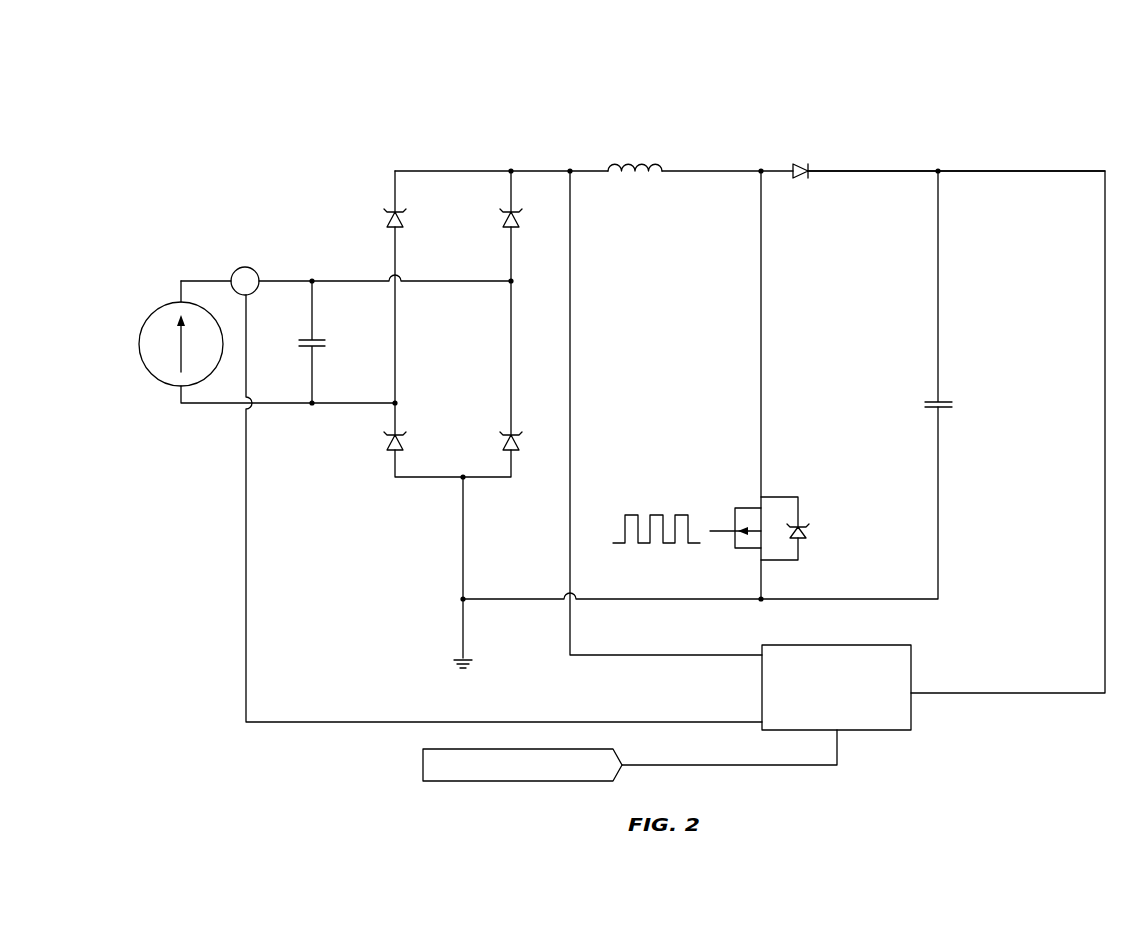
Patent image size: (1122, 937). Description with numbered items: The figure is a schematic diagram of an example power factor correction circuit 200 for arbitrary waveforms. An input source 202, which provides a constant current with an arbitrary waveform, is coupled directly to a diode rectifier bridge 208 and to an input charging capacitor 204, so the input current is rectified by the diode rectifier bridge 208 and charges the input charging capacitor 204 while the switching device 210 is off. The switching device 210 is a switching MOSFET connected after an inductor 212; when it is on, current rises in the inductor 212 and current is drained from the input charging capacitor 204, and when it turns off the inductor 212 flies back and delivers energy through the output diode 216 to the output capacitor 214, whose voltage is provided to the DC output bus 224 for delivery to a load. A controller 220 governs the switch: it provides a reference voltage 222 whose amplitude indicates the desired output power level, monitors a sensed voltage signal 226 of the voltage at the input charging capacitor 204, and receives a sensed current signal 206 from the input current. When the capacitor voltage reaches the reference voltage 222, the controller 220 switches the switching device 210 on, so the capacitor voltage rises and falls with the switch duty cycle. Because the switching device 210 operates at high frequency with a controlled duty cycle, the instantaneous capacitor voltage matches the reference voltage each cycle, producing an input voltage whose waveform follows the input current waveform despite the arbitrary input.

The power factor correction circuit 200 is at (958, 48).
The input source 202 is at (139, 342).
The input charging capacitor 204 is at (317, 348).
The sensed current signal 206 is at (243, 267).
The diode rectifier bridge 208 is at (393, 462).
The switching device 210 is at (790, 497).
The inductor 212 is at (602, 173).
The output capacitor 214 is at (942, 409).
The output diode 216 is at (827, 177).
The controller 220 is at (873, 732).
The reference voltage 222 is at (422, 765).
The DC output bus 224 is at (941, 174).
The sensed voltage signal 226 is at (568, 557).